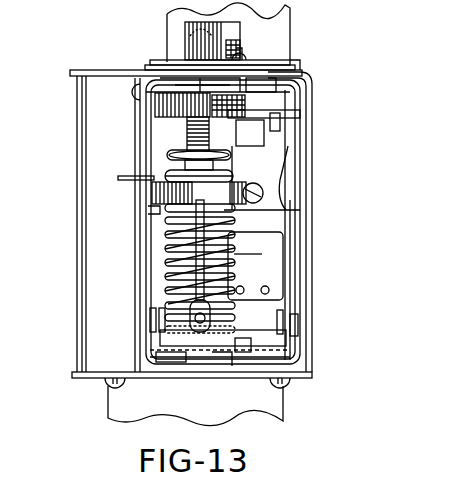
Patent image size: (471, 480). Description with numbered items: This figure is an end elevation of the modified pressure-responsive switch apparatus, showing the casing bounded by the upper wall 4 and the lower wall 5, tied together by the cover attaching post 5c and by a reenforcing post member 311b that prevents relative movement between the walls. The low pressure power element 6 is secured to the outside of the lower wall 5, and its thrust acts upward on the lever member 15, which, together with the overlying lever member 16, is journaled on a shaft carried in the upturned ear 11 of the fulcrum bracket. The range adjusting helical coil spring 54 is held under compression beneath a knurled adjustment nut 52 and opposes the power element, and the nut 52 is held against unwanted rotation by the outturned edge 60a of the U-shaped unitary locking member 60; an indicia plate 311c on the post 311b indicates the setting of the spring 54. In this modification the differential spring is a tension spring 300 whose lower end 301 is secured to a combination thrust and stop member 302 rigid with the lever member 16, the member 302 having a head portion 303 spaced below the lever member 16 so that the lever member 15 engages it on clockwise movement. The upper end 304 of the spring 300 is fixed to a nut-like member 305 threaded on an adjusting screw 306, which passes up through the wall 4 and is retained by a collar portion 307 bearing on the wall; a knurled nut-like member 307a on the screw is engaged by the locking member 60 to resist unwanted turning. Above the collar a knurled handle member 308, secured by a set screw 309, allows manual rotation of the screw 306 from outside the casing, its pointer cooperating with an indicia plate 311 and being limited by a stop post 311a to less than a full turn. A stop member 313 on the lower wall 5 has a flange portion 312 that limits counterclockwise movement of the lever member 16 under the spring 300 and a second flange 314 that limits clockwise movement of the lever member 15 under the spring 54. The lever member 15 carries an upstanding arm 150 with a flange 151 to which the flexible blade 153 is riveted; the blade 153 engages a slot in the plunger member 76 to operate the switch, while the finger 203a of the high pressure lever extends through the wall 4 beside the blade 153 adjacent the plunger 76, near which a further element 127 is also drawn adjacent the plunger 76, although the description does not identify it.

The upper wall 4 is at (100, 70).
The lower wall 5 is at (86, 380).
The cover attaching post 5c is at (78, 288).
The low pressure power element 6 is at (109, 421).
The upturned ear 11 is at (300, 312).
The lever member 15 is at (166, 364).
The lever member 16 is at (166, 344).
The adjustment nut 52 is at (156, 198).
The helical coil spring 54 is at (165, 232).
The unitary locking member 60 is at (300, 224).
The outturned edge 60a is at (222, 222).
The plunger member 76 is at (248, 165).
The post 127 is at (272, 136).
The upstanding arm 150 is at (292, 276).
The flange 151 is at (286, 247).
The flexible blade 153 is at (249, 244).
The downwardly projecting finger 203a is at (280, 120).
The tension spring 300 is at (168, 266).
The end of tension spring 301 is at (234, 284).
The combination thrust and stop member 302 is at (198, 348).
The head portion 303 is at (232, 366).
The upper end of tension spring 304 is at (170, 166).
The nut-like member 305 is at (186, 142).
The adjusting screw 306 is at (234, 88).
The collar portion 307 is at (186, 60).
The knurled nut-like member 307a is at (155, 110).
The knurled handle member 308 is at (172, 26).
The set screw 309 is at (229, 47).
The indicia plate 311 is at (150, 64).
The stop post 311a is at (242, 56).
The reenforcing post member 311b is at (147, 226).
The indicia plate 311c is at (136, 186).
The flange portion 312 is at (245, 332).
The stop member 313 is at (270, 346).
The second flange 314 is at (298, 364).